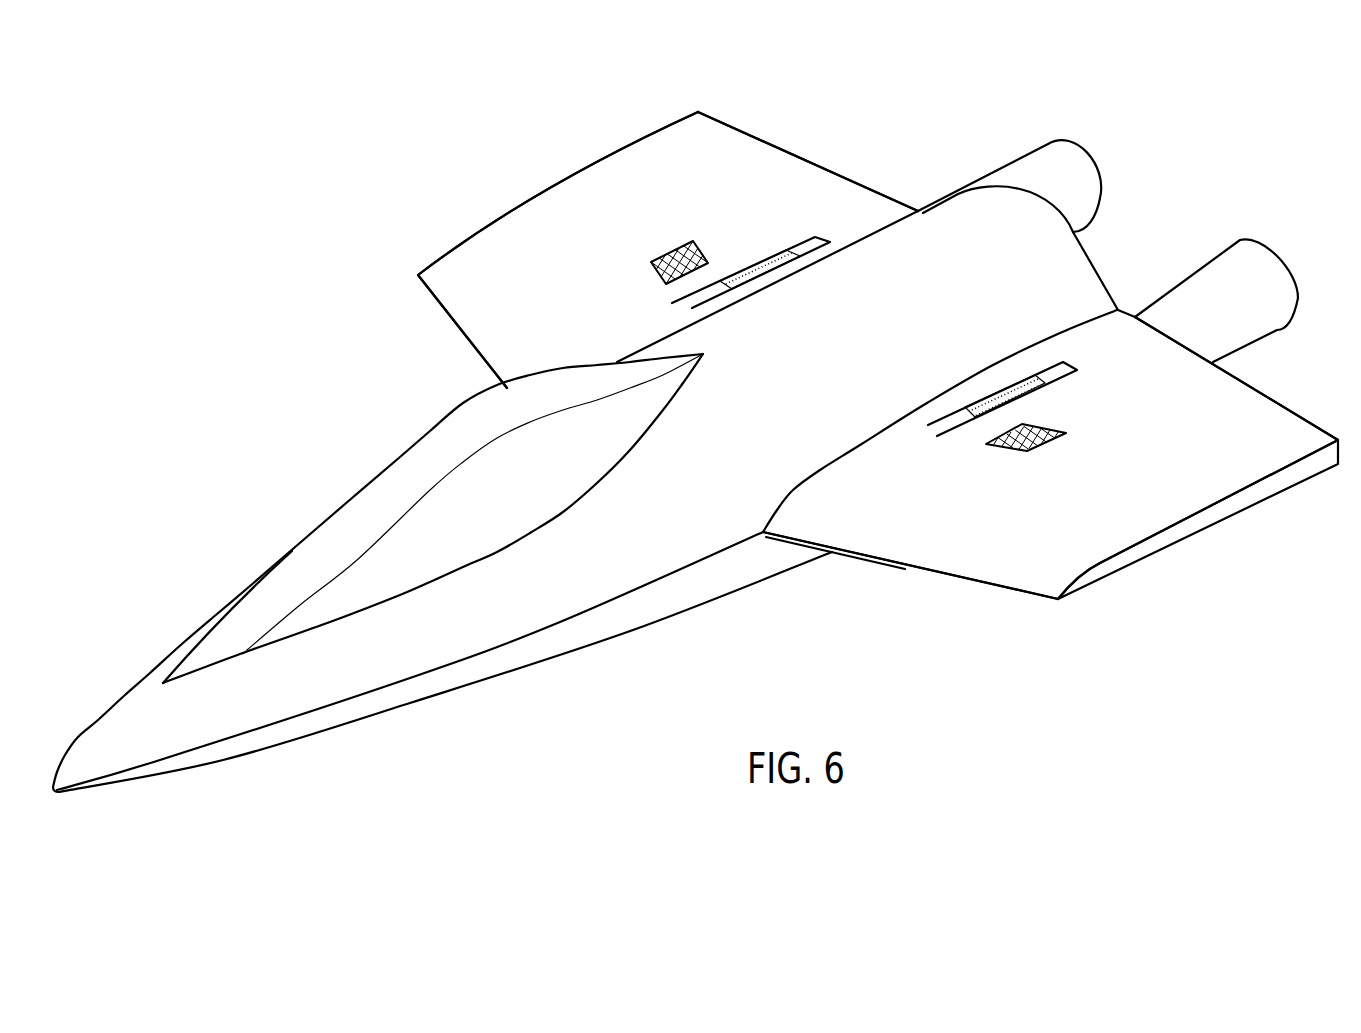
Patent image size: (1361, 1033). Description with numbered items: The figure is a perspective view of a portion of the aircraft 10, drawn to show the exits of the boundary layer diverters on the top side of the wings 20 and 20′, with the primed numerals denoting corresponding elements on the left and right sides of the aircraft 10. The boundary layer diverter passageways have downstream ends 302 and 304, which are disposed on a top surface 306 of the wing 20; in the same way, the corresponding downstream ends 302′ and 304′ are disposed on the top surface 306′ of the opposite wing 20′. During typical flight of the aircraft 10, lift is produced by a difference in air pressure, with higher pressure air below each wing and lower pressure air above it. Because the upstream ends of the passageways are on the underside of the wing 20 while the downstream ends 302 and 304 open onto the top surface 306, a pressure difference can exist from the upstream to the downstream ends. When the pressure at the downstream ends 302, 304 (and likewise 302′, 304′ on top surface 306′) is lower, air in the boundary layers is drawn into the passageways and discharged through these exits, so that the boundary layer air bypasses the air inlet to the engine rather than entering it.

The aircraft 10 is at (286, 221).
The wing 20 is at (1050, 458).
The wing 20′ is at (668, 250).
The downstream end 302 is at (1020, 380).
The downstream end 302′ is at (768, 258).
The downstream end 304 is at (1027, 432).
The downstream end 304′ is at (682, 258).
The top surface 306 is at (981, 528).
The top surface 306′ is at (565, 328).